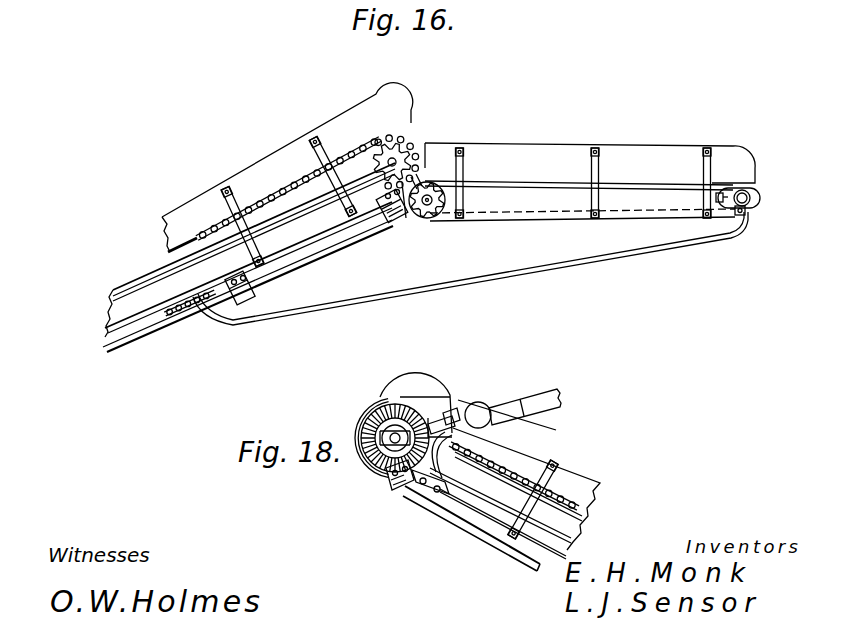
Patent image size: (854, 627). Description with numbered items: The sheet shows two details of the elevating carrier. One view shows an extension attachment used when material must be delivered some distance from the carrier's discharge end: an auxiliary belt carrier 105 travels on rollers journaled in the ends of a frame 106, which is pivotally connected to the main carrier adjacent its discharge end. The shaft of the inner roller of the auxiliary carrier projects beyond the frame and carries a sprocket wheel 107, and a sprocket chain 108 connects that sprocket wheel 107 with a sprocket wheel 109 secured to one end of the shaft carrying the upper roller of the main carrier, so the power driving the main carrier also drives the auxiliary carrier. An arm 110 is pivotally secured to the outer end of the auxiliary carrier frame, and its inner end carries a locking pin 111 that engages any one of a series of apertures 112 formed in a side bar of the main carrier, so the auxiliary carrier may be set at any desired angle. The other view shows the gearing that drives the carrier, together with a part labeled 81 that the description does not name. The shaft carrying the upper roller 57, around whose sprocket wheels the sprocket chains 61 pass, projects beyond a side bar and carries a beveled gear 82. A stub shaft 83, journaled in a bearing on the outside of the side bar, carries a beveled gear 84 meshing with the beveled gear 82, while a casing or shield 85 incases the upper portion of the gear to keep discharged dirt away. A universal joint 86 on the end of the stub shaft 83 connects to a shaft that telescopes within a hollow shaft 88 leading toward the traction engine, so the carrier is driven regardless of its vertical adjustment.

In FIG. 16, the auxiliary belt carrier 105 is at (513, 182).
In FIG. 16, the frame 106 is at (590, 163).
In FIG. 16, the sprocket wheel 107 is at (430, 207).
In FIG. 16, the sprocket chain 108 is at (424, 176).
In FIG. 16, the sprocket wheel 109 is at (380, 150).
In FIG. 16, the arm 110 is at (606, 248).
In FIG. 16, the locking pin 111 is at (189, 301).
In FIG. 16, the apertures 112 is at (184, 315).
In FIG. 18, the upper roller 57 is at (393, 452).
In FIG. 18, the sprocket chains 61 is at (519, 477).
In FIG. 18, the conveyor chain 81 is at (522, 428).
In FIG. 18, the beveled gear 82 is at (370, 414).
In FIG. 18, the stub shaft 83 is at (457, 416).
In FIG. 18, the beveled gear 84 is at (418, 412).
In FIG. 18, the casing or shield 85 is at (380, 398).
In FIG. 18, the universal joint 86 is at (483, 406).
In FIG. 18, the hollow shaft 88 is at (547, 398).